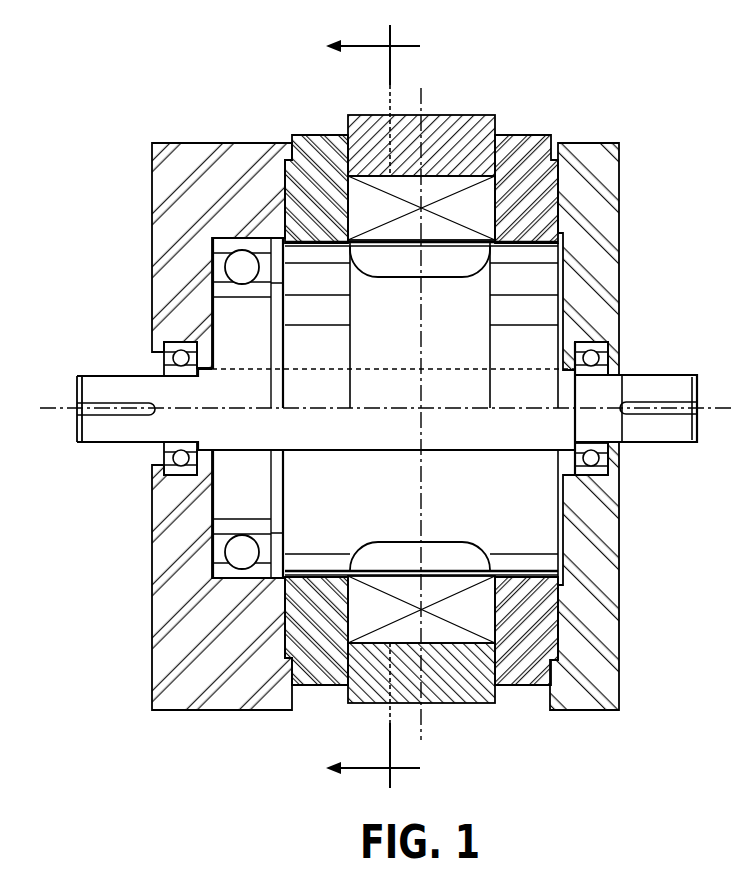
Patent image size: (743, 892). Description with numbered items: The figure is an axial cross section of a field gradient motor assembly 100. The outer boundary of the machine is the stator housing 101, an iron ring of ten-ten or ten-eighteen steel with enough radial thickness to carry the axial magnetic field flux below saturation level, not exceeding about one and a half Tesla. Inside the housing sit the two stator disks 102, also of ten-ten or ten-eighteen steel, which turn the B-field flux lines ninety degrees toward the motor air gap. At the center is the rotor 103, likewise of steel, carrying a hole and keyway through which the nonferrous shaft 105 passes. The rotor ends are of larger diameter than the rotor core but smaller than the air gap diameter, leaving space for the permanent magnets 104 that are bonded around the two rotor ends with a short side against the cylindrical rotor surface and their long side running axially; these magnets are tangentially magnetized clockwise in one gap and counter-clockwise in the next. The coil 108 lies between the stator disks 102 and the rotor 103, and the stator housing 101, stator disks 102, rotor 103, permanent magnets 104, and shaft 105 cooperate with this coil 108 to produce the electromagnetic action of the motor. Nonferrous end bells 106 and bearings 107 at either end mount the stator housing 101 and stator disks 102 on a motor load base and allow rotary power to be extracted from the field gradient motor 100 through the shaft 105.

The field gradient motor assembly 100 is at (164, 98).
The stator housing 101 is at (460, 115).
The stator disks 102 is at (527, 135).
The rotor 103 is at (472, 346).
The permanent magnets 104 is at (317, 560).
The shaft 105 is at (123, 376).
The end bells 106 is at (290, 703).
The bearings 107 is at (240, 238).
The coil 108 is at (487, 218).